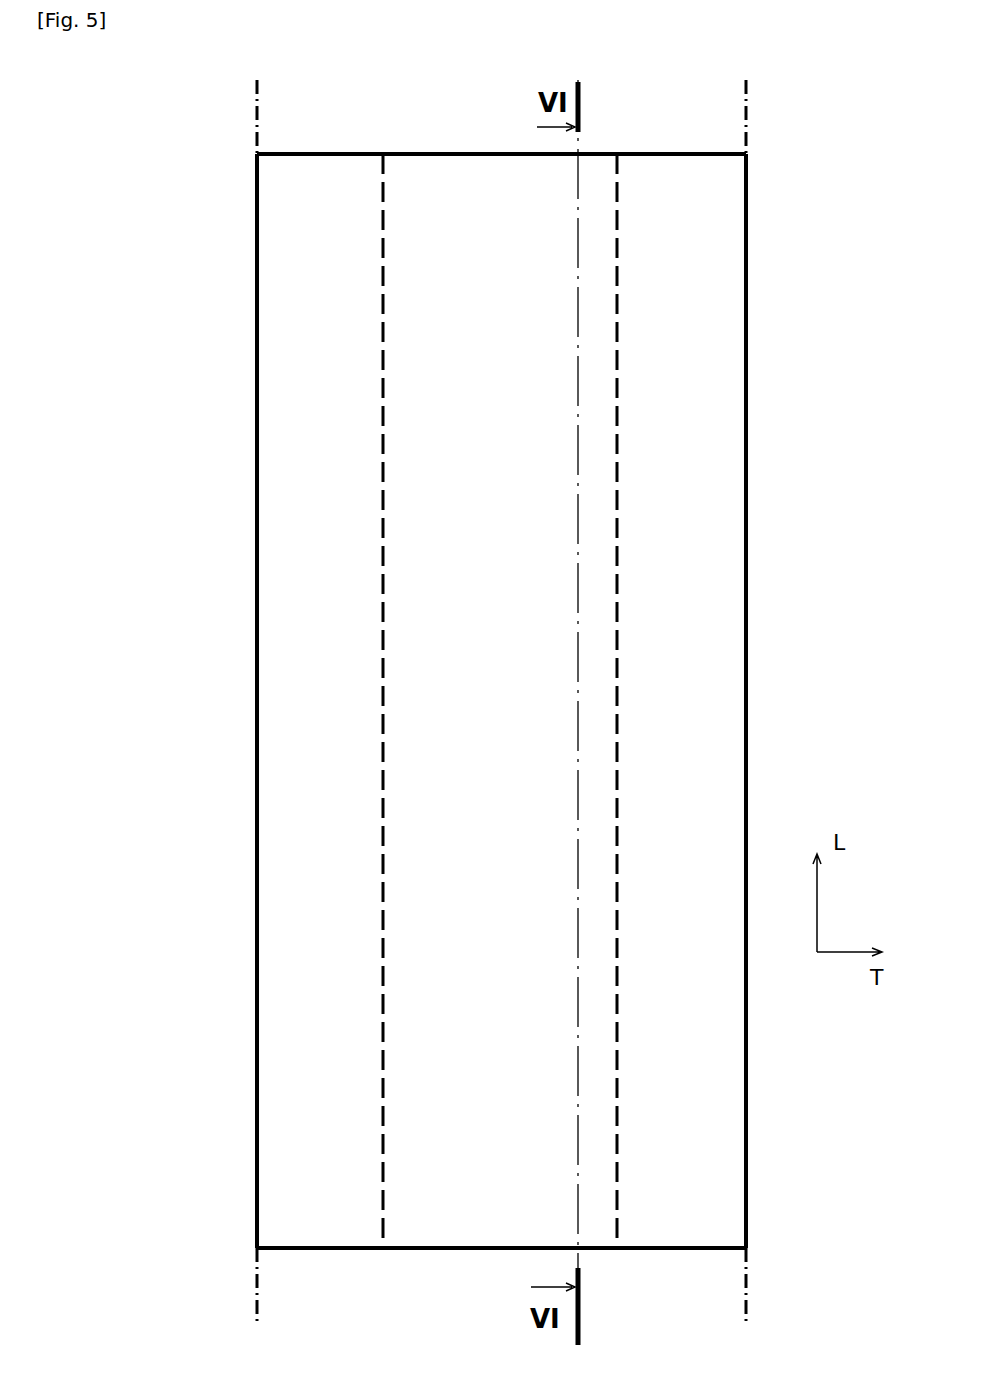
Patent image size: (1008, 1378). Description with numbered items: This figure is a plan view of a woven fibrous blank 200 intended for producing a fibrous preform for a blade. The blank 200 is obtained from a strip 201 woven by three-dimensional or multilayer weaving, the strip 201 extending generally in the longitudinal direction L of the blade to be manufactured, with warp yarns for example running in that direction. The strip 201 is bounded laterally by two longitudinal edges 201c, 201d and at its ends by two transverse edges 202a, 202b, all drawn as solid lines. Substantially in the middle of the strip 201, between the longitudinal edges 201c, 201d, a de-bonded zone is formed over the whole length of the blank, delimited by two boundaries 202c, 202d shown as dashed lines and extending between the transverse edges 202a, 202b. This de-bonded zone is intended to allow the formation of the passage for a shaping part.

The fibrous blank 200 is at (235, 905).
The strip 201 is at (257, 118).
The longitudinal edge 201c is at (257, 515).
The longitudinal edge 201d is at (748, 527).
The transverse edge 202a is at (347, 1250).
The transverse edge 202b is at (444, 153).
The boundary 202c is at (383, 673).
The boundary 202d is at (618, 668).